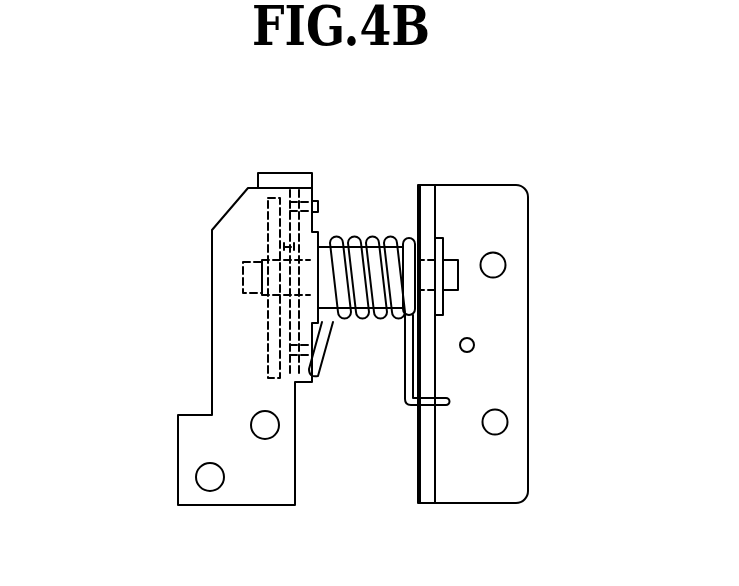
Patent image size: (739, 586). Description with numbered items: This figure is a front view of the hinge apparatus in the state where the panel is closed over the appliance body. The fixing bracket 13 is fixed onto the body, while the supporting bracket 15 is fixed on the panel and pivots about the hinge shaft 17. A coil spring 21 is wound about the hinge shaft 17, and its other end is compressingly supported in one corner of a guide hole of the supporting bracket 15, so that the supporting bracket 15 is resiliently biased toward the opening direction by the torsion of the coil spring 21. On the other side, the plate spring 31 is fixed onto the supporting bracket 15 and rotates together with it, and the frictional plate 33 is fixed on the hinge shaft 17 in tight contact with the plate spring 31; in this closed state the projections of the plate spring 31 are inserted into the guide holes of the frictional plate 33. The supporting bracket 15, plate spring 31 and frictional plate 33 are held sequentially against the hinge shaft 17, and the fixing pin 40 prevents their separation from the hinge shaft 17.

The fixing bracket 13 is at (510, 207).
The supporting bracket 15 is at (188, 467).
The hinge shaft 17 is at (322, 257).
The coil spring 21 is at (357, 247).
The plate spring 31 is at (292, 186).
The frictional plate 33 is at (273, 213).
The fixing pin 40 is at (263, 248).